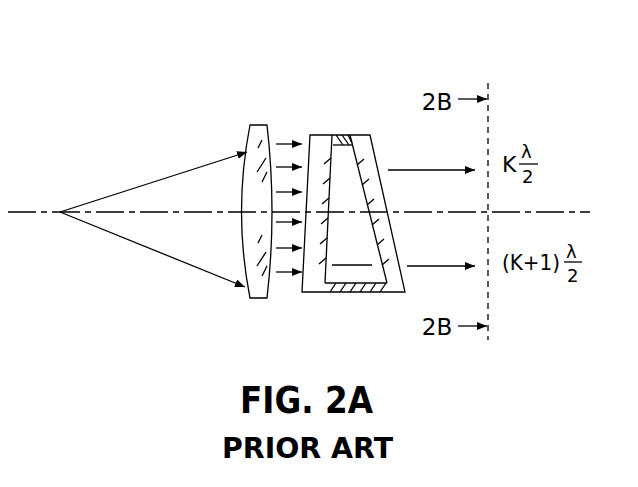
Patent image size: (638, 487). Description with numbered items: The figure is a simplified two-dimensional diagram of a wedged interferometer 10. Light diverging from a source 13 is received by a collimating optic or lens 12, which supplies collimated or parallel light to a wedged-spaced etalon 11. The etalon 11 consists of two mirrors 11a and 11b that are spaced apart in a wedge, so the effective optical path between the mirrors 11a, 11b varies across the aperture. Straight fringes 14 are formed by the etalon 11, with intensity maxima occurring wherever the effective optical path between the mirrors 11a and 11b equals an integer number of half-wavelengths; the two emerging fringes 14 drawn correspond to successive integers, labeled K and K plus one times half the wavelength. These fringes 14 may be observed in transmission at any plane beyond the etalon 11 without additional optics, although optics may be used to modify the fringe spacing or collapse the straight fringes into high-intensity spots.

The interferometer 10 is at (163, 82).
The wedged-spaced etalon 11 is at (345, 206).
The mirror 11a is at (310, 295).
The mirror 11b is at (398, 295).
The collimating optic or lens 12 is at (258, 124).
The source 13 is at (59, 211).
The straight fringes 14 is at (434, 168).